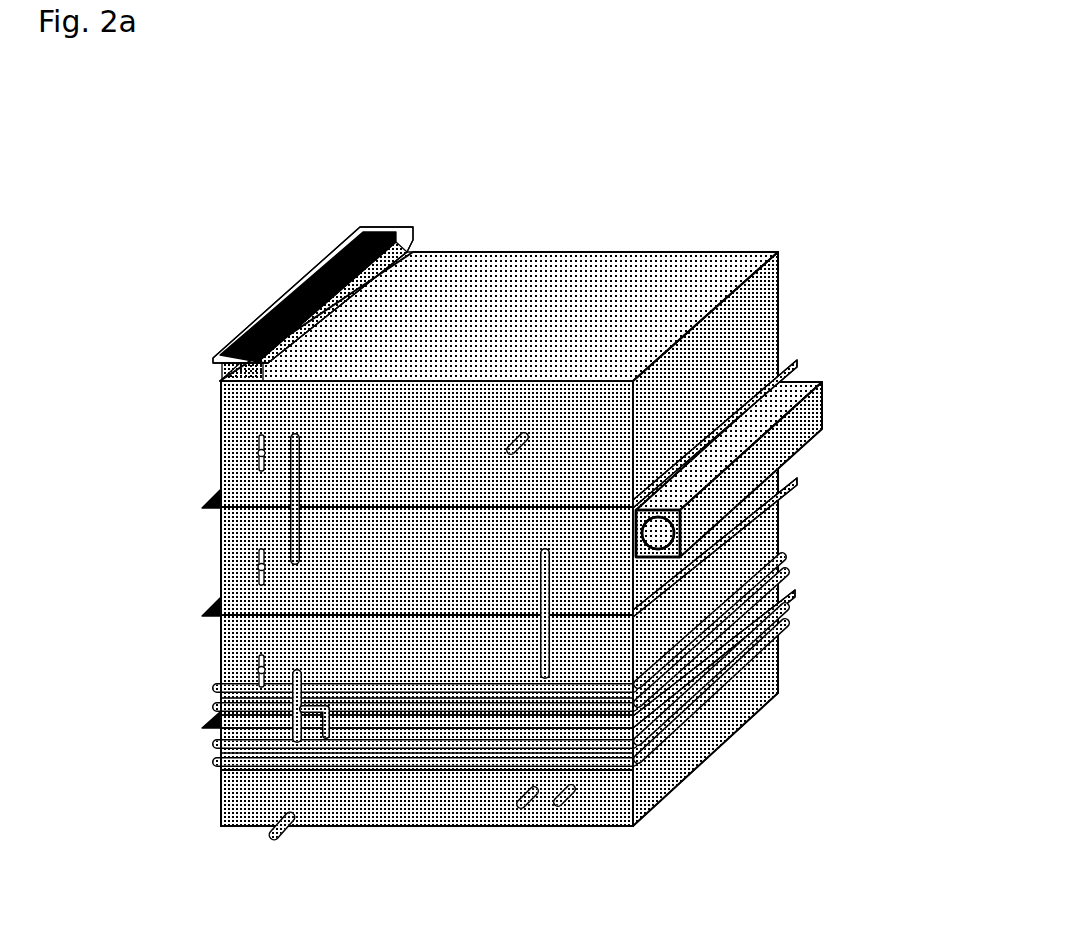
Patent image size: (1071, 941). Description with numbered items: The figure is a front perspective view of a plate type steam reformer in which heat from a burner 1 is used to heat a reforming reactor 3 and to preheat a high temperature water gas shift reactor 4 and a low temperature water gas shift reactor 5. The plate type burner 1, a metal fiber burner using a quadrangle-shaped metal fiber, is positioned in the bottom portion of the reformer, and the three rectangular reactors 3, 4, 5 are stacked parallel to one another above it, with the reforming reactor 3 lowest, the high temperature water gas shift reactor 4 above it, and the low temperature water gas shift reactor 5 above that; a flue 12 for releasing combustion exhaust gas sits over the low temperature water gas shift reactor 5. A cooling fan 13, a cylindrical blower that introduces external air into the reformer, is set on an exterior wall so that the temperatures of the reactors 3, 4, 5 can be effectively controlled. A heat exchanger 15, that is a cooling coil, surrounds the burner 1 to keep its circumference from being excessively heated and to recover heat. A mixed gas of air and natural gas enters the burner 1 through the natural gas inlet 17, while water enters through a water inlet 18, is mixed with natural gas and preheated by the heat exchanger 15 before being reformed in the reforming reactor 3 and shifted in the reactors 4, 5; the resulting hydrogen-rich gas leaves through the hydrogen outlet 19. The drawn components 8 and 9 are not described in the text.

The burner 1 is at (221, 806).
The reforming reactor 3 is at (221, 668).
The high temperature water gas shift reactor 4 is at (221, 570).
The low temperature water gas shift reactor 5 is at (221, 462).
The guide pins 8 is at (262, 432).
The connector pipe 9 is at (270, 838).
The flue 12 is at (270, 300).
The cooling fan 13 is at (822, 410).
The heat exchanger 15 is at (787, 627).
The natural gas inlet 17 is at (513, 807).
The water inlet 18 is at (555, 808).
The hydrogen outlet 19 is at (527, 432).